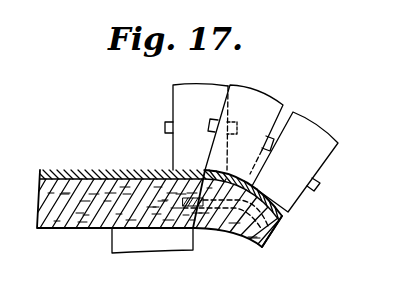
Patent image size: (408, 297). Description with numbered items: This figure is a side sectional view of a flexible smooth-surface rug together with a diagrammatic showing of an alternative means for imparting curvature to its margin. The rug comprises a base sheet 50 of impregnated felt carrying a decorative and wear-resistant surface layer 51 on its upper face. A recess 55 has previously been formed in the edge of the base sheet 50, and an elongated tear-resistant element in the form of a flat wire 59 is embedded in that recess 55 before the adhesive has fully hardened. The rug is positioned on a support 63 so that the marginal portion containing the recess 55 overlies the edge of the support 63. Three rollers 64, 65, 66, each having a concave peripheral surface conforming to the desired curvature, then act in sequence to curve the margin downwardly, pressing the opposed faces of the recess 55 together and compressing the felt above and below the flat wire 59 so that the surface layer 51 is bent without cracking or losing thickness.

The base sheet 50 is at (57, 214).
The decorative and wear-resistant surface layer 51 is at (107, 172).
The recess 55 is at (250, 243).
The flat wire 59 is at (205, 232).
The support 63 is at (128, 242).
The roller 64 is at (184, 97).
The roller 65 is at (278, 84).
The roller 66 is at (315, 150).